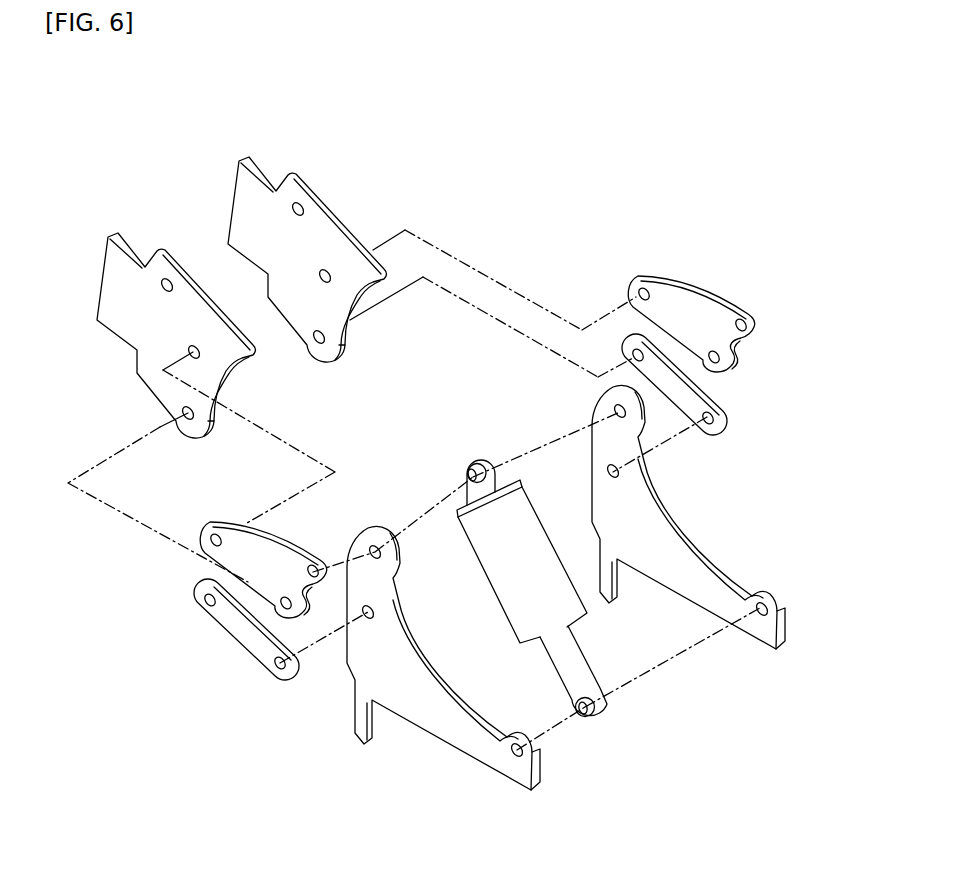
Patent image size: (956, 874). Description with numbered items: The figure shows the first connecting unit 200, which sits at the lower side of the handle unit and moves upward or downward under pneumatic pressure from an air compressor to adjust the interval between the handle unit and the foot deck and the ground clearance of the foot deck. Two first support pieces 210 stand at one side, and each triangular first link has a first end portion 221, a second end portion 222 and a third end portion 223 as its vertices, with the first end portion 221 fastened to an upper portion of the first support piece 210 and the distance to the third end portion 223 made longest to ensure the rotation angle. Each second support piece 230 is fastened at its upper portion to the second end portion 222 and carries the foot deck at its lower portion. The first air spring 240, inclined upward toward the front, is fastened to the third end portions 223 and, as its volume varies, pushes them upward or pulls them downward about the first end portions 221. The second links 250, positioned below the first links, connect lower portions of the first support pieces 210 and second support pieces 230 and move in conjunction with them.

The first connecting unit 200 is at (630, 114).
The first support piece 210 is at (125, 234).
The first end portion 221 is at (207, 524).
The second end portion 222 is at (298, 620).
The third end portion 223 is at (323, 560).
The second support piece 230 is at (430, 728).
The first air spring 240 is at (491, 582).
The second link 250 is at (237, 641).